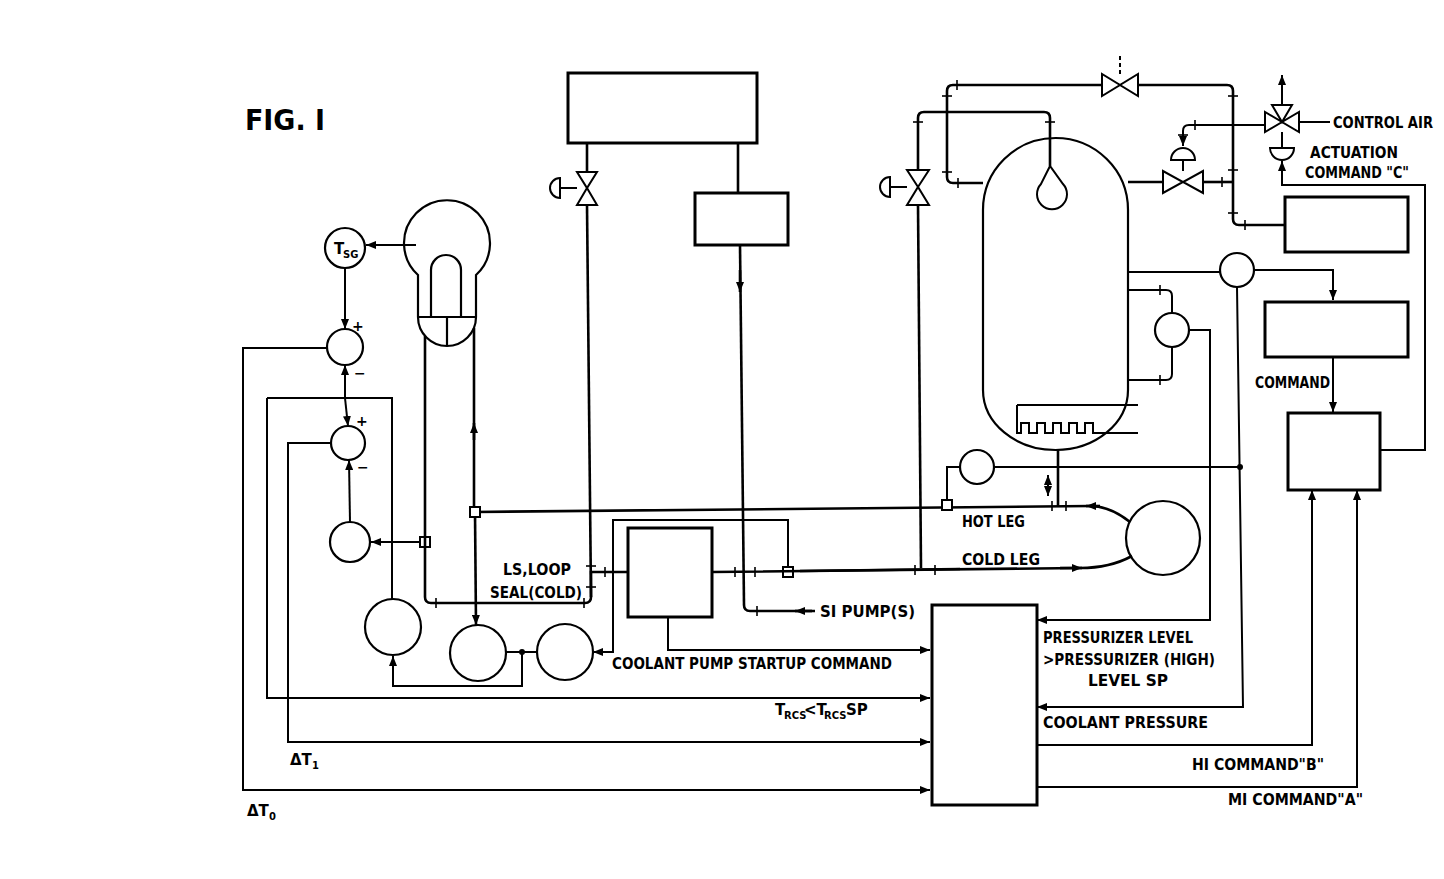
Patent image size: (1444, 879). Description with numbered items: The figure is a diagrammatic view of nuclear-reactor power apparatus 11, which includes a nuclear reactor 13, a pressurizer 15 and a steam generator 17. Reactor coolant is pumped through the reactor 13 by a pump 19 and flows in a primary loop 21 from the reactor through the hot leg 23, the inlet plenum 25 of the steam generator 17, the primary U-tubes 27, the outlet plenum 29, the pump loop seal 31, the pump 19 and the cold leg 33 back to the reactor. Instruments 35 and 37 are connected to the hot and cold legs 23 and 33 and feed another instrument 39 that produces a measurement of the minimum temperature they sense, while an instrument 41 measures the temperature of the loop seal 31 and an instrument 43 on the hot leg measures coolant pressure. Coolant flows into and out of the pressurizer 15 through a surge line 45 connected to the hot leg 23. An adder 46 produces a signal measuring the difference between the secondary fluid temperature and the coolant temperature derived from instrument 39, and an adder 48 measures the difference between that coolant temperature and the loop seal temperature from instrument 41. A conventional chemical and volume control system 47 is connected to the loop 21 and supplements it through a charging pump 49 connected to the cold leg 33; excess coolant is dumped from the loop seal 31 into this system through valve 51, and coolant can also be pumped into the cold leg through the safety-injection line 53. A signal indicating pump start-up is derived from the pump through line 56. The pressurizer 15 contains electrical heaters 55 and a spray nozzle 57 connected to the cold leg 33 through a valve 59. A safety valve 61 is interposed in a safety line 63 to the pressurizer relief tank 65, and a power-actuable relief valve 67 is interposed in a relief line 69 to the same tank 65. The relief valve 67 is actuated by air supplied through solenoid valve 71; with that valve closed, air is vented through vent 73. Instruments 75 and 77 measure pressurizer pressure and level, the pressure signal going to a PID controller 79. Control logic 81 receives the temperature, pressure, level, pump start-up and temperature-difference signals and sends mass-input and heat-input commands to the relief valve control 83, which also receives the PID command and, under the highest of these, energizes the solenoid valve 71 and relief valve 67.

The nuclear-reactor power apparatus 11 is at (529, 101).
The nuclear reactor 13 is at (1184, 498).
The pressurizer 15 is at (980, 273).
The steam generator 17 is at (421, 209).
The pump 19 is at (712, 553).
The primary loop 21 is at (863, 551).
The hot leg 23 is at (814, 508).
The inlet plenum 25 is at (476, 325).
The primary U-tubes 27 is at (462, 270).
The outlet plenum 29 is at (418, 327).
The pump loop seal 31 is at (427, 492).
The cold leg 33 is at (858, 574).
The instrument 35 is at (453, 642).
The instrument 37 is at (544, 634).
The instrument 39 is at (366, 620).
The instrument 41 is at (333, 530).
The instrument 43 is at (966, 452).
The surge line 45 is at (1066, 484).
The adder 46 is at (359, 359).
The chemical and volume control system 47 is at (757, 108).
The adder 48 is at (337, 456).
The charging pump 49 is at (706, 193).
The valve 51 is at (598, 190).
The safety-injection line 53 is at (779, 614).
The electrical heaters 55 is at (1065, 434).
The line 56 is at (864, 650).
The nozzle 57 is at (1038, 196).
The valve 59 is at (907, 177).
The safety valve 61 is at (1120, 97).
The safety line 63 is at (1193, 87).
The pressurizer relief tank 65 is at (1284, 214).
The power-actuable relief valve 67 is at (1177, 195).
The relief line 69 is at (1146, 182).
The solenoid valve 71 is at (1293, 117).
The vent 73 is at (1281, 90).
The instrument 75 is at (1227, 258).
The instrument 77 is at (1185, 320).
The PID controller 79 is at (1366, 302).
The control logic 81 is at (988, 605).
The relief valve control 83 is at (1354, 413).